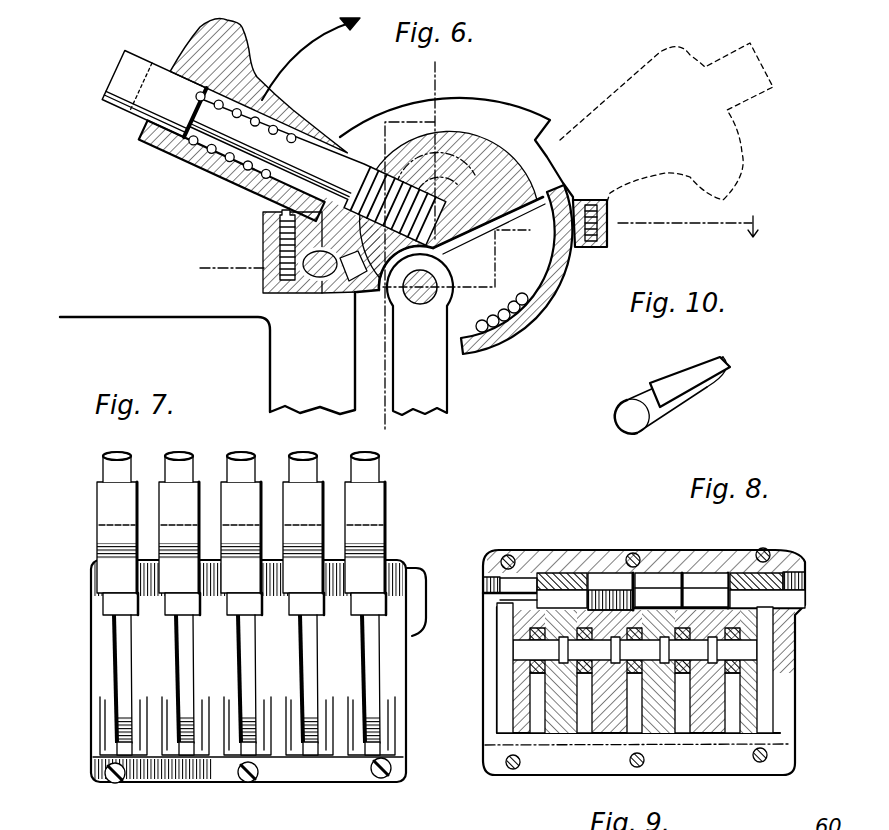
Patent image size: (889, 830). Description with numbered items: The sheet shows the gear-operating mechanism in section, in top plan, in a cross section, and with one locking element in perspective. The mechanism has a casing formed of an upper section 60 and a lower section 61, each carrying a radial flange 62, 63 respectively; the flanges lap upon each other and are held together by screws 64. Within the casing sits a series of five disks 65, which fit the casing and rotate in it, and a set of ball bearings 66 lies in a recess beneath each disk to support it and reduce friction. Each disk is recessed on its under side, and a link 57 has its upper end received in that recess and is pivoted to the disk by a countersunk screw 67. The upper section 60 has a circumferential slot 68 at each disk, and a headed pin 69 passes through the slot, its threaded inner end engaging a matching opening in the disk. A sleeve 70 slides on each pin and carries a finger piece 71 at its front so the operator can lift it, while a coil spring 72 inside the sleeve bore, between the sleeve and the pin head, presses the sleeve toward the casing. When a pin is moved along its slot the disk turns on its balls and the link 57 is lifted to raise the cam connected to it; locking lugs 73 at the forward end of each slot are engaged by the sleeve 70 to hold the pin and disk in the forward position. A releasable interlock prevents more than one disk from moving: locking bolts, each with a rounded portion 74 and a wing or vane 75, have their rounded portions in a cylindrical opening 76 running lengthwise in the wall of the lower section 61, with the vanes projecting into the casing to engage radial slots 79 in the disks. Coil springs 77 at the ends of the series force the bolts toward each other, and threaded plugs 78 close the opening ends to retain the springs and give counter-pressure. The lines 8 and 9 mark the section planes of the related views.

In FIG. 8, the link 57 is at (520, 695).
In FIG. 6, the upper section of the casing 60 is at (463, 103).
In FIG. 6, the lower section of the casing 61 is at (476, 352).
In FIG. 8, the lower section of the casing 61 is at (785, 648).
In FIG. 6, the radial flange 62 is at (262, 212).
In FIG. 6, the radial flange 63 is at (266, 296).
In FIG. 6, the screws 64 is at (288, 224).
In FIG. 7, the screws 64 is at (105, 776).
In FIG. 8, the screws 64 is at (508, 555).
In FIG. 6, the disks 65 is at (427, 135).
In FIG. 7, the disks 65 is at (187, 745).
In FIG. 8, the disks 65 is at (510, 730).
In FIG. 6, the ball bearings 66 is at (530, 303).
In FIG. 8, the ball bearings 66 is at (592, 735).
In FIG. 6, the screw 67 is at (420, 305).
In FIG. 8, the screw 67 is at (515, 660).
In FIG. 6, the circumferential slot 68 is at (500, 133).
In FIG. 7, the circumferential slot 68 is at (112, 650).
In FIG. 6, the headed pin 69 is at (124, 60).
In FIG. 7, the headed pin 69 is at (176, 456).
In FIG. 6, the sleeve 70 is at (172, 163).
In FIG. 7, the sleeve 70 is at (97, 506).
In FIG. 6, the finger piece 71 is at (243, 22).
In FIG. 6, the coil spring 72 is at (262, 118).
In FIG. 6, the locking lugs 73 is at (523, 165).
In FIG. 7, the locking lugs 73 is at (100, 750).
In FIG. 10, the rounded portion 74 is at (620, 416).
In FIG. 8, the rounded portion 74 is at (655, 582).
In FIG. 6, the wing or vane 75 is at (398, 338).
In FIG. 10, the wing or vane 75 is at (733, 363).
In FIG. 8, the wing or vane 75 is at (690, 596).
In FIG. 6, the cylindrical opening 76 is at (304, 310).
In FIG. 8, the cylindrical opening 76 is at (548, 573).
In FIG. 8, the coil springs 77 is at (596, 573).
In FIG. 7, the threaded plugs 78 is at (426, 580).
In FIG. 8, the threaded plugs 78 is at (492, 585).
In FIG. 6, the radial slots 79 is at (437, 270).
In FIG. 7, the radial slots 79 is at (424, 596).
In FIG. 8, the radial slots 79 is at (538, 601).
In FIG. 6, the section line 8— 8 is at (476, 248).
In FIG. 6, the section line 9— 9 is at (408, 243).